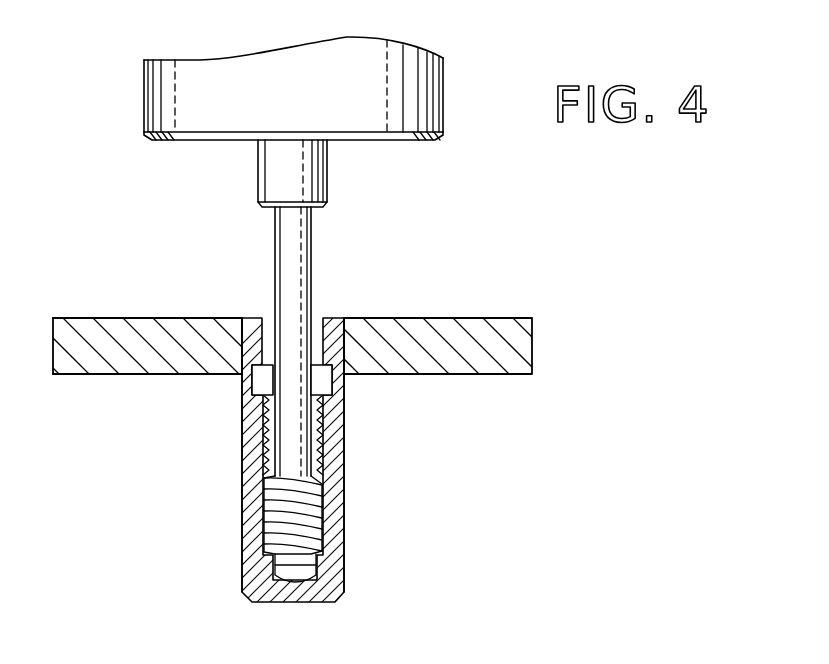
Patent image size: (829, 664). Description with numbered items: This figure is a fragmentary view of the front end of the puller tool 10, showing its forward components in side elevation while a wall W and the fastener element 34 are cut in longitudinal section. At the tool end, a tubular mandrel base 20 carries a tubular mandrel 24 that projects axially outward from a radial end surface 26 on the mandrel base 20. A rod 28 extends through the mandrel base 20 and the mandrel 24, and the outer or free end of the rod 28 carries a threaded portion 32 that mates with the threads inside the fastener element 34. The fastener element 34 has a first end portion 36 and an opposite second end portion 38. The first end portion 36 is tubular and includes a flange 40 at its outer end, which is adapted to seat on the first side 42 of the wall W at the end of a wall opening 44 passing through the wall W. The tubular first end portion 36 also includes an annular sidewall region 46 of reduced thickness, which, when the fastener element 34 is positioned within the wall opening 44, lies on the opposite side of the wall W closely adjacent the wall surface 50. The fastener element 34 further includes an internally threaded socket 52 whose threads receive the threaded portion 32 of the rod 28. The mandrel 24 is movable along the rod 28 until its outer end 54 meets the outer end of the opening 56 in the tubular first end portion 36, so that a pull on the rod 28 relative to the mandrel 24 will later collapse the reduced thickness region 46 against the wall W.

The puller tool 10 is at (480, 54).
The tubular mandrel base 20 is at (432, 93).
The tubular mandrel 24 is at (272, 170).
The radial end surface 26 is at (190, 143).
The rod 28 is at (300, 282).
The threaded portion 32 is at (303, 500).
The fastener element 34 is at (230, 528).
The first end portion 36 is at (241, 337).
The second end portion 38 is at (333, 533).
The flange 40 is at (243, 325).
The first side 42 is at (80, 318).
The wall opening 44 is at (346, 357).
The annular sidewall region of reduced thickness 46 is at (242, 393).
The wall surface 50 is at (82, 375).
The internally threaded socket 52 is at (273, 550).
The outer end 54 is at (327, 204).
The opening 56 is at (242, 260).
The wall W is at (475, 337).